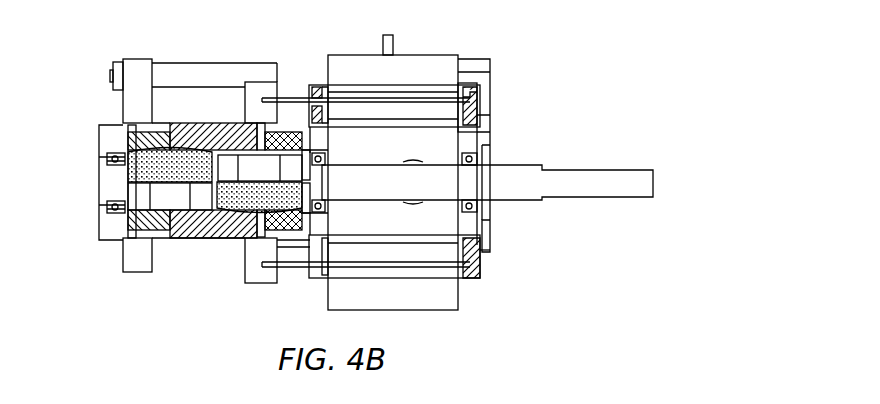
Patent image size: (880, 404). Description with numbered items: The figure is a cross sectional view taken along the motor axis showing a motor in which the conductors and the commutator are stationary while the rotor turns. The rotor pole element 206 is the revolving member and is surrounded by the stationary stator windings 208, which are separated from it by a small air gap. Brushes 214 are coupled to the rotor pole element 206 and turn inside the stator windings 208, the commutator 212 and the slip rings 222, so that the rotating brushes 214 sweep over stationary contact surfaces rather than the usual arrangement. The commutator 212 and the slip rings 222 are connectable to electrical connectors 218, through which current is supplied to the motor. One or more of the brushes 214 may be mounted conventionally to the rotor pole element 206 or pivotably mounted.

The rotor pole element 206 is at (430, 143).
The stator windings 208 is at (407, 95).
The commutator 212 is at (195, 123).
The brushes 214 is at (215, 200).
The electrical connectors 218 is at (265, 90).
The slip rings 222 is at (143, 137).